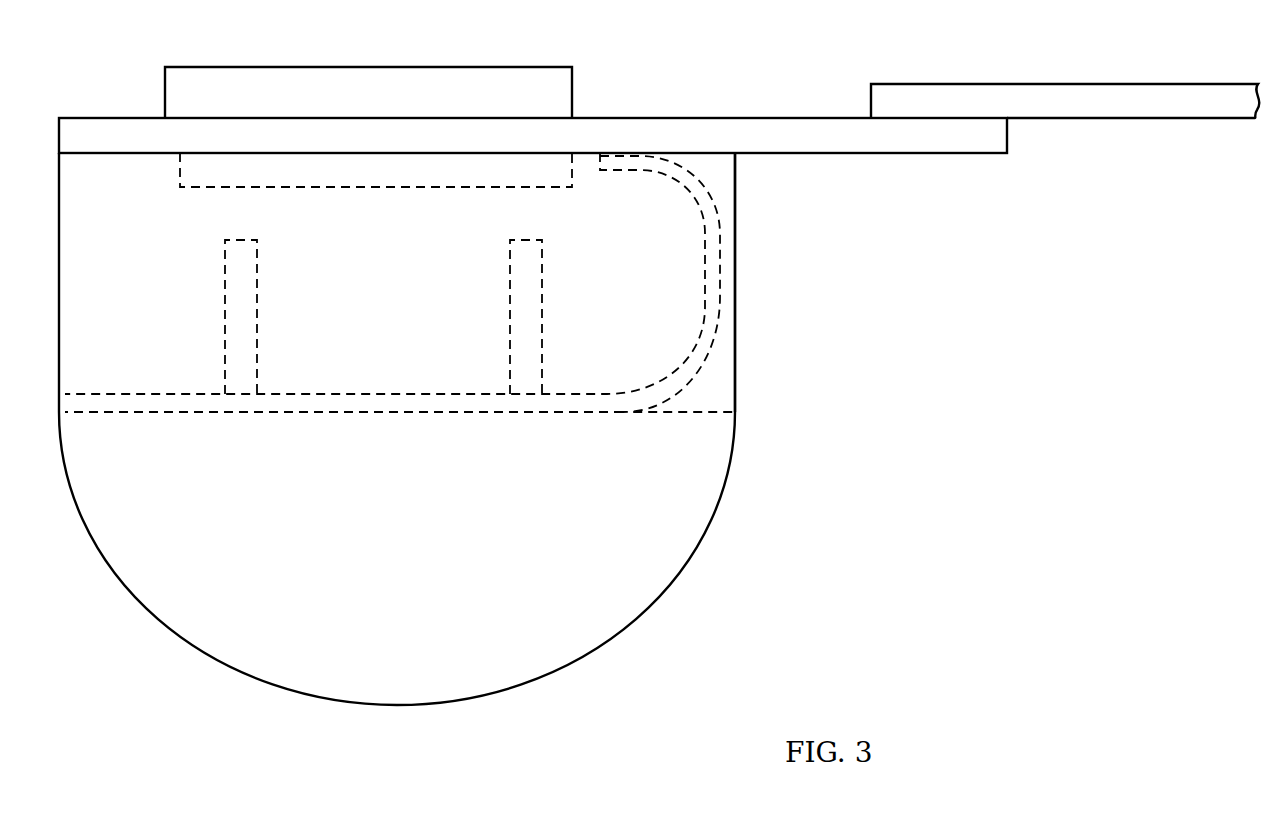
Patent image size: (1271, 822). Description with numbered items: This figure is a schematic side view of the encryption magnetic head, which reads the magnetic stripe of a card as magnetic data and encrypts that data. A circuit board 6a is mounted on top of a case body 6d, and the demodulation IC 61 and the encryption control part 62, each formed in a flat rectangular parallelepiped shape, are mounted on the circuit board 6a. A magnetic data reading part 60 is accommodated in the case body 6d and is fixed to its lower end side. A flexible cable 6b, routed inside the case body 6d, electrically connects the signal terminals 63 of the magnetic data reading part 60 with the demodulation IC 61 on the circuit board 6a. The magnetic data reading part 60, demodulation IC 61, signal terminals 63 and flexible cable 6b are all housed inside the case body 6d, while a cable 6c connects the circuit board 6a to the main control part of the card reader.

The magnetic data reading part 60 is at (392, 706).
The circuit board 6a is at (693, 118).
The flexible cable 6b is at (706, 205).
The cable 6c is at (1020, 84).
The case body 6d is at (737, 377).
The demodulation IC 61 is at (418, 188).
The encryption control part 62 is at (425, 66).
The signal terminals 63 is at (257, 345).